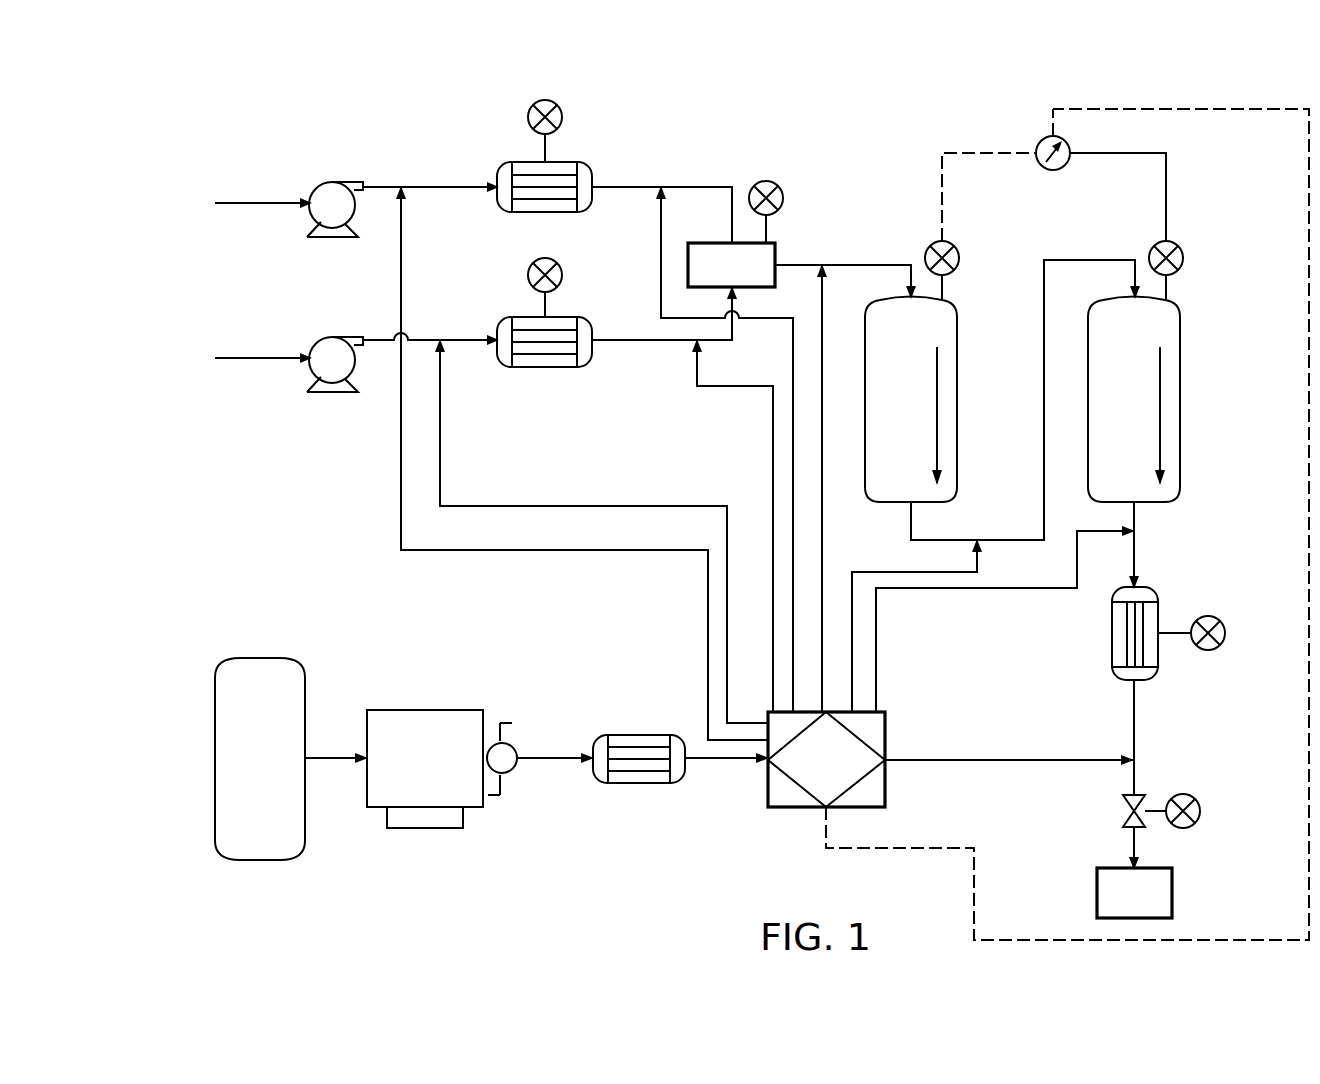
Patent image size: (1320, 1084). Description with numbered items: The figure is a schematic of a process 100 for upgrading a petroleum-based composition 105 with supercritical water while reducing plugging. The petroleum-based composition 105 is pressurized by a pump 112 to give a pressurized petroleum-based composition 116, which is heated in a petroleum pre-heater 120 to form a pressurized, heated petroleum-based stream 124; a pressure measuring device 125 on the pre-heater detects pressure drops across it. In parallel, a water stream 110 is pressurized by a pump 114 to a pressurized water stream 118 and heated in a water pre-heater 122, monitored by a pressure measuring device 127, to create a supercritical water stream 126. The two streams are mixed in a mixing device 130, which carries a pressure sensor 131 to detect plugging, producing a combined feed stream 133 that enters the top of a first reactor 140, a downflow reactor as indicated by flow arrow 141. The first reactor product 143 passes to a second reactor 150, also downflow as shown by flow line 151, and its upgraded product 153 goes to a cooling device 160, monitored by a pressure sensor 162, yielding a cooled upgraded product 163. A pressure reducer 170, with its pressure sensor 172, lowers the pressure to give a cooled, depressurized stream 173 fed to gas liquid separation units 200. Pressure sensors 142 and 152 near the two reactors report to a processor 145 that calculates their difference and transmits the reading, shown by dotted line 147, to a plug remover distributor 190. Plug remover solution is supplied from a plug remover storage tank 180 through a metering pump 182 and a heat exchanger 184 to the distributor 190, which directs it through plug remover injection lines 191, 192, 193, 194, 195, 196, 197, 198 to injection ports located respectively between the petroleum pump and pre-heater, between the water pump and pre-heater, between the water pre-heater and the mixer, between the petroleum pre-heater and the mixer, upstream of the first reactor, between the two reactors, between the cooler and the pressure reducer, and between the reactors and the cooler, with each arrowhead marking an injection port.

The process 100 is at (172, 150).
The petroleum-based composition 105 is at (258, 203).
The water stream 110 is at (258, 358).
The pump 112 is at (347, 182).
The pump 114 is at (347, 337).
The pressurized petroleum-based composition 116 is at (397, 187).
The pressurized water stream 118 is at (388, 340).
The petroleum pre-heater 120 is at (497, 166).
The water pre-heater 122 is at (545, 367).
The pressurized, heated petroleum-based stream 124 is at (648, 187).
The pressure measuring device 125 is at (562, 117).
The supercritical water stream 126 is at (625, 340).
The pressure measuring device 127 is at (562, 275).
The mixing device 130 is at (731, 265).
The pressure sensor 131 is at (772, 181).
The combined feed stream 133 is at (852, 265).
The first reactor 140 is at (911, 400).
The flow arrow 141 is at (950, 398).
The pressure sensor 142 is at (959, 258).
The first reactor product 143 is at (990, 540).
The processor 145 is at (1050, 170).
The dotted line 147 is at (1172, 109).
The second reactor 150 is at (1134, 400).
The flow line 151 is at (1175, 398).
The pressure sensor 152 is at (1183, 258).
The upgraded product 153 is at (1134, 518).
The cooling device 160 is at (1158, 672).
The pressure sensor 162 is at (1225, 633).
The cooled upgraded product 163 is at (1134, 730).
The pressure reducer 170 is at (1123, 811).
The pressure sensor 172 is at (1200, 811).
The cooled, depressurized stream 173 is at (1134, 840).
The plug remover storage tank 180 is at (291, 759).
The metering pump 182 is at (480, 769).
The heat exchanger 184 is at (640, 735).
The plug remover distributor 190 is at (826, 759).
The plug remover injection line 191 is at (401, 250).
The plug remover injection line 192 is at (608, 506).
The plug remover injection line 193 is at (773, 452).
The plug remover injection line 194 is at (661, 218).
The plug remover injection line 195 is at (822, 517).
The plug remover injection line 196 is at (927, 572).
The plug remover injection line 197 is at (1008, 760).
The plug remover injection line 198 is at (1027, 588).
The gas liquid separation units 200 is at (1134, 893).